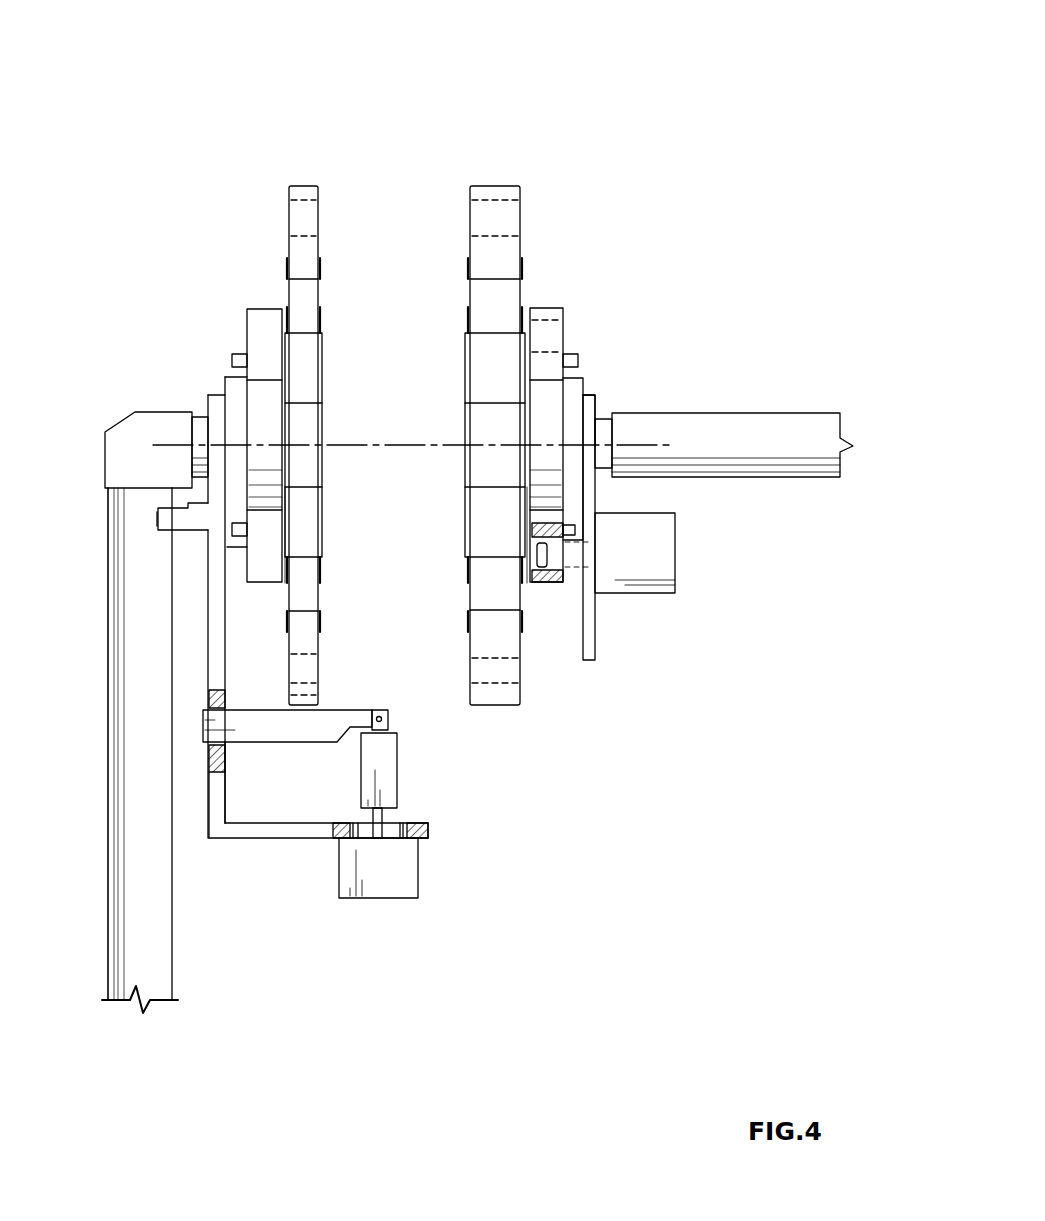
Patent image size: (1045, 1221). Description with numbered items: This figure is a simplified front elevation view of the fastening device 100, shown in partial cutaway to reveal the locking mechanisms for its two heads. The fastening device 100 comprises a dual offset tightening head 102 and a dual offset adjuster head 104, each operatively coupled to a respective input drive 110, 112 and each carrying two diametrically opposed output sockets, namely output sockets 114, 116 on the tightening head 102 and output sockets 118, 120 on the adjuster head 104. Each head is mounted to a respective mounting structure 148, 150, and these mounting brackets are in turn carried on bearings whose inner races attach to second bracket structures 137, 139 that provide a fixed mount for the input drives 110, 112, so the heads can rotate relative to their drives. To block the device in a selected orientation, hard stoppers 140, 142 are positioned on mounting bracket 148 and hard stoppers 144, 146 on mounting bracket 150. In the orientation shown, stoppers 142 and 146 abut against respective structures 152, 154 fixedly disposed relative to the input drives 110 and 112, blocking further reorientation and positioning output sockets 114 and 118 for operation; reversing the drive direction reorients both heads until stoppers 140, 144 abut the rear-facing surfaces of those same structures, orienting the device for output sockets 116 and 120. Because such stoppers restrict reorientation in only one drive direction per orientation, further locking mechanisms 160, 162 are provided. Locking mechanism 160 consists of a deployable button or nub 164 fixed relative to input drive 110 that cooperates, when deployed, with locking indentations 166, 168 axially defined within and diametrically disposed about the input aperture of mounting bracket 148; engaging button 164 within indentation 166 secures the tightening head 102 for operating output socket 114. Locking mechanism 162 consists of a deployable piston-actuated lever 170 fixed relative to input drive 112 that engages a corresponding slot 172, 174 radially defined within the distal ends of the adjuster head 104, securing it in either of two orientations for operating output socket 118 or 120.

The fastening device 100 is at (563, 103).
The dual offset tightening head 102 is at (464, 363).
The dual offset adjuster head 104 is at (325, 300).
The input drive 110 is at (715, 425).
The input drive 112 is at (115, 430).
The output socket 114 is at (520, 222).
The output socket 116 is at (468, 668).
The output socket 118 is at (322, 225).
The output socket 120 is at (322, 640).
The second bracket structure 137 is at (595, 399).
The second bracket structure 139 is at (213, 403).
The hard stopper 140 is at (575, 360).
The hard stopper 142 is at (576, 530).
The hard stopper 144 is at (235, 357).
The hard stopper 146 is at (230, 530).
The mounting structure 148 is at (545, 309).
The mounting structure 150 is at (280, 310).
The structure 152 is at (570, 583).
The structure 154 is at (237, 548).
The locking mechanism 160 is at (657, 564).
The locking mechanism 162 is at (397, 778).
The deployable button 164 is at (550, 555).
The locking indentation 166 is at (535, 540).
The locking indentation 168 is at (563, 330).
The piston-actuated lever 170 is at (268, 745).
The indentation or slot 172 is at (320, 695).
The indentation or slot 174 is at (290, 193).